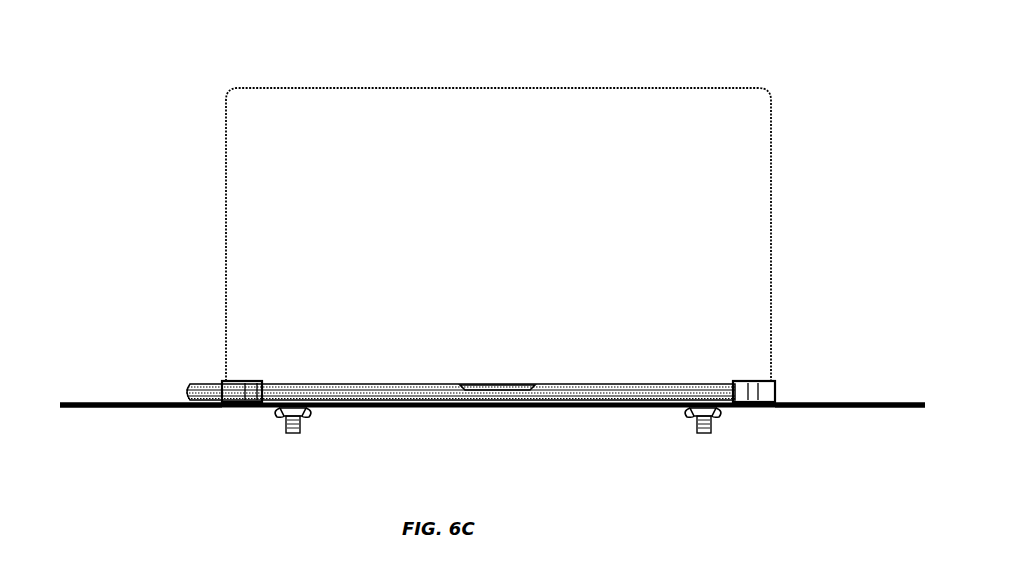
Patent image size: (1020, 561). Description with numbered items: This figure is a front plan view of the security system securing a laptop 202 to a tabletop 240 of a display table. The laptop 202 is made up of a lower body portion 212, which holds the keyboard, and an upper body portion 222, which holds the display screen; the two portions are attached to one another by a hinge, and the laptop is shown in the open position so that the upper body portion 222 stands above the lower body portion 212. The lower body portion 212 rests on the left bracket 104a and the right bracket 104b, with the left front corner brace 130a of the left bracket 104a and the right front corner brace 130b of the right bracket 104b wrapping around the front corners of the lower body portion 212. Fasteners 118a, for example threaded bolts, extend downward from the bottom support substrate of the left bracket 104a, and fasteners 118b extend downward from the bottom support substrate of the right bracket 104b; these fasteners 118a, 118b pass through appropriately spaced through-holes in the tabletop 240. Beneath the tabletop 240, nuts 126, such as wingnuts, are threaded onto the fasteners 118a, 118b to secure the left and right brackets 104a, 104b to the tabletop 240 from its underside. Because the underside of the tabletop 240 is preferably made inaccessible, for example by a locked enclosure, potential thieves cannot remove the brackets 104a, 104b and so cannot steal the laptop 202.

The laptop 202 is at (624, 80).
The upper body portion 222 is at (248, 142).
The lower body portion 212 is at (419, 383).
The tabletop 240 is at (92, 404).
The left bracket 104a is at (164, 396).
The right bracket 104b is at (830, 392).
The left front corner brace 130a is at (218, 377).
The right front corner brace 130b is at (786, 371).
The nuts 126 is at (281, 413).
The fasteners 118a is at (292, 434).
The fasteners 118b is at (706, 434).